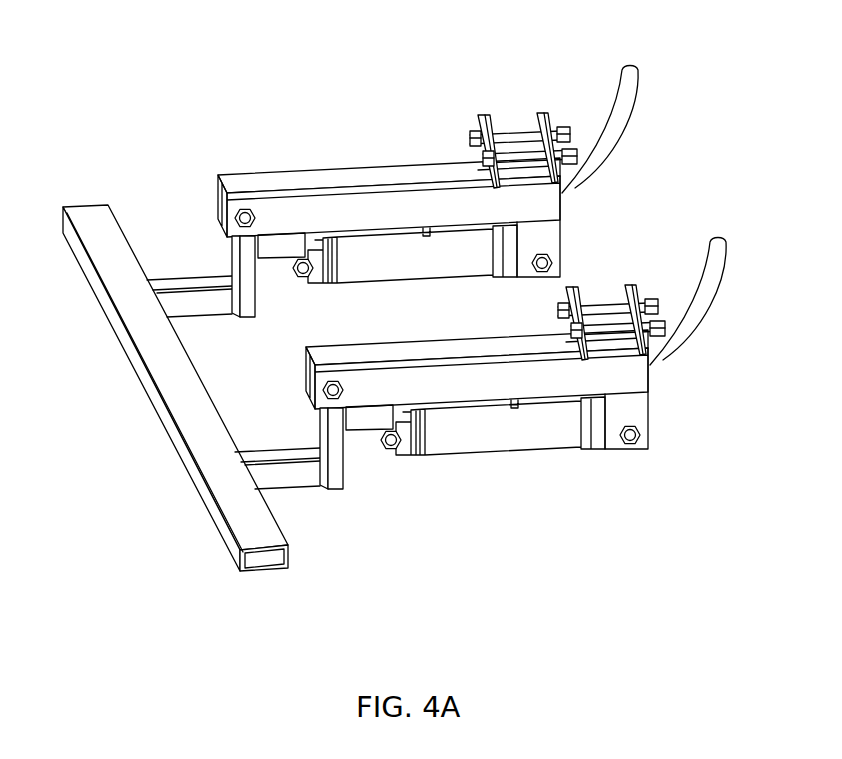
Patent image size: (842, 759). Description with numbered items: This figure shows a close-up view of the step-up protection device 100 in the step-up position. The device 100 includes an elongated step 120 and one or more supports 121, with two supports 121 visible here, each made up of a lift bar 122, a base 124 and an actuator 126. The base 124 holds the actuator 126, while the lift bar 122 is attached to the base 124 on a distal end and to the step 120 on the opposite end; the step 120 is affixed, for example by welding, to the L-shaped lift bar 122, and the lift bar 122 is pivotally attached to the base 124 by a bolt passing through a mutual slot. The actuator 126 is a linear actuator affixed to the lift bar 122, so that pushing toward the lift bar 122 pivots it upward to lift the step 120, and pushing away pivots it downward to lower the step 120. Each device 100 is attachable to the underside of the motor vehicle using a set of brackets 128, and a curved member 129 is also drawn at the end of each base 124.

The step-up protection device 100 is at (172, 65).
The step 120 is at (163, 367).
The support 121 is at (275, 155).
The lift bar 122 is at (245, 303).
The base 124 is at (360, 205).
The actuator 126 is at (370, 270).
The brackets 128 is at (550, 113).
The curved guide tube 129 is at (605, 157).